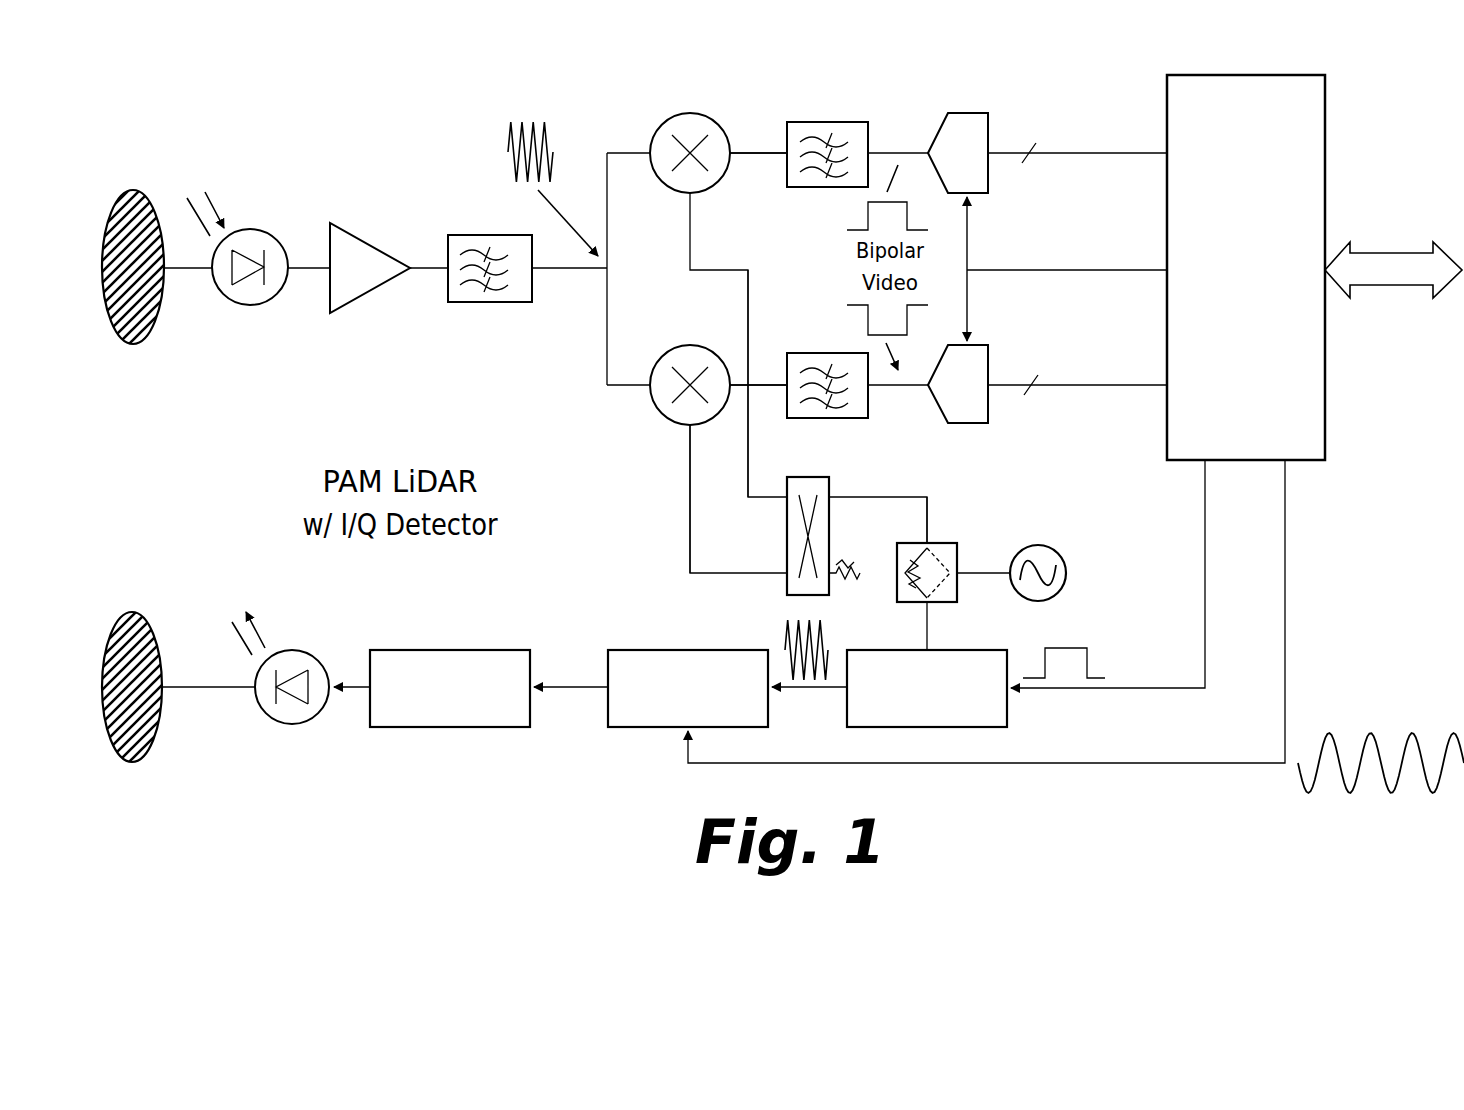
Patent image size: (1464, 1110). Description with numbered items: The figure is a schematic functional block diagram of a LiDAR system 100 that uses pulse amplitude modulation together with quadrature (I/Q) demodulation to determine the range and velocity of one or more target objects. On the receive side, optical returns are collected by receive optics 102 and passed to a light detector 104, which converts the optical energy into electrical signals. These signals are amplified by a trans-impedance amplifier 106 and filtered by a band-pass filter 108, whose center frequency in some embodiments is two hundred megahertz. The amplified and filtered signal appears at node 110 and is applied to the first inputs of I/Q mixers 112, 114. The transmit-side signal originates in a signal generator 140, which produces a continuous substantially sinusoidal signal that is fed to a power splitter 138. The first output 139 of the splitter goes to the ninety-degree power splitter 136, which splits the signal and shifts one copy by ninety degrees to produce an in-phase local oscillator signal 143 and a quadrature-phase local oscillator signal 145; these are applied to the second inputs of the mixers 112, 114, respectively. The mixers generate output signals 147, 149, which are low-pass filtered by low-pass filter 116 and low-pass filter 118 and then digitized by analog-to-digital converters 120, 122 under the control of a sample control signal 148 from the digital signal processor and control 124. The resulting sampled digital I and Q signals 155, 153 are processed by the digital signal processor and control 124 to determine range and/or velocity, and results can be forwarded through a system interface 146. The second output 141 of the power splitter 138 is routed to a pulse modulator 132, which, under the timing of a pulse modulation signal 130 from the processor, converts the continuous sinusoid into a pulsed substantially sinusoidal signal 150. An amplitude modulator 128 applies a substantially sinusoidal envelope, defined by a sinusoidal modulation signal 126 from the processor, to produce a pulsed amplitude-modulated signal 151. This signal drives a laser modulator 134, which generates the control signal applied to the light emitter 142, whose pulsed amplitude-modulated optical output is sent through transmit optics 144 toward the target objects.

The LiDAR system 100 is at (236, 73).
The receive optics 102 is at (140, 192).
The light detector 104 is at (253, 229).
The trans-impedance amplifier 106 is at (362, 300).
The band-pass filter 108 is at (480, 235).
The node 110 is at (612, 265).
The I/Q mixer 112 is at (718, 123).
The I/Q mixer 114 is at (683, 345).
The low-pass filter 116 is at (860, 122).
The low-pass filter 118 is at (845, 353).
The analog-to-digital converter 120 is at (968, 113).
The analog-to-digital converter 122 is at (985, 345).
The digital signal processor and control 124 is at (1310, 132).
The sinusoidal modulation signal 126 is at (1287, 585).
The amplitude modulator 128 is at (684, 650).
The pulse modulation signal 130 is at (1206, 552).
The pulse modulator 132 is at (1010, 706).
The laser modulator 134 is at (442, 650).
The 90-degree power splitter 136 is at (830, 480).
The power splitter 138 is at (912, 545).
The first output 139 is at (932, 520).
The signal generator 140 is at (1065, 560).
The second output 141 is at (955, 606).
The light emitter 142 is at (298, 650).
The in-phase local oscillator signal 143 is at (750, 470).
The transmit optics 144 is at (160, 705).
The quadrature-phase local oscillator signal 145 is at (688, 495).
The system interface 146 is at (1386, 285).
The output signal 147 is at (762, 158).
The sample control signal 148 is at (1075, 270).
The output signal 149 is at (768, 380).
The pulsed substantially sinusoidal signal 150 is at (834, 637).
The pulsed amplitude-modulated signal 151 is at (560, 682).
The sampled digital quadrature signal 153 is at (1067, 385).
The sampled digital in-phase signal 155 is at (1118, 153).